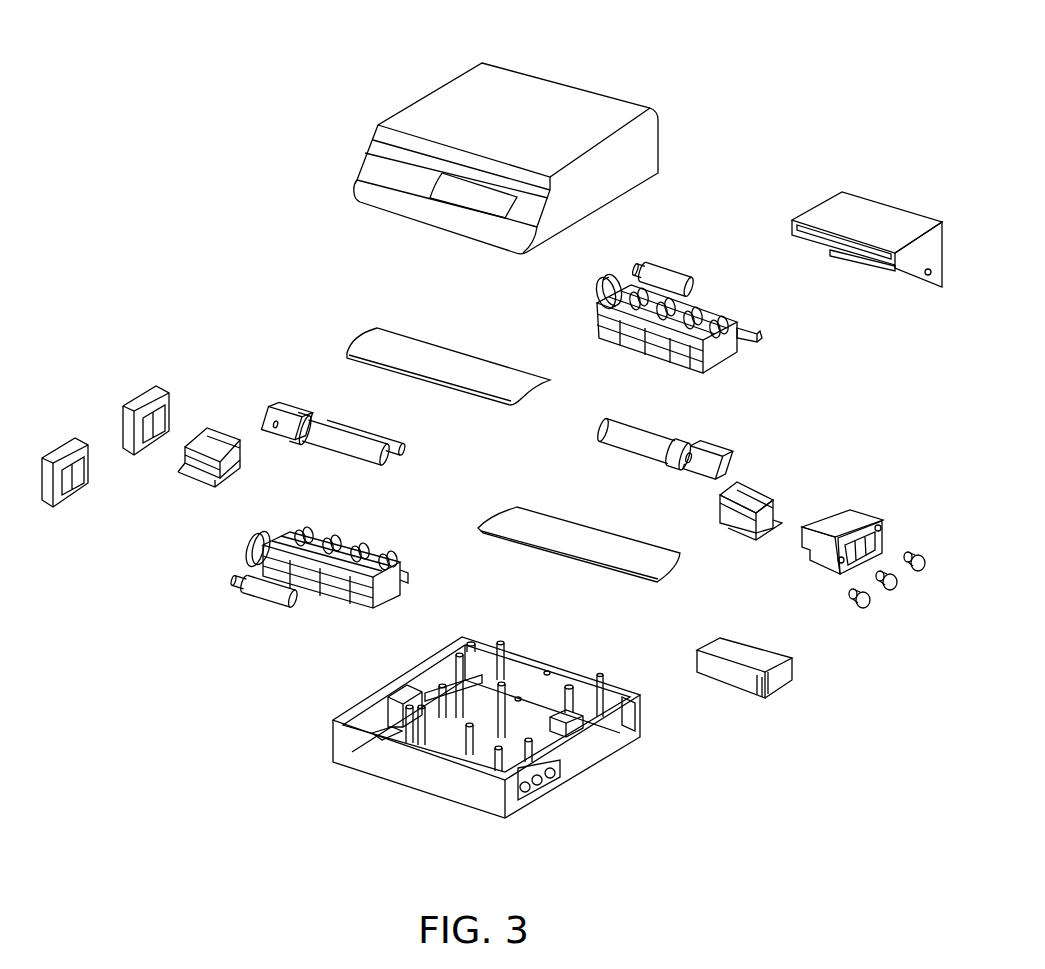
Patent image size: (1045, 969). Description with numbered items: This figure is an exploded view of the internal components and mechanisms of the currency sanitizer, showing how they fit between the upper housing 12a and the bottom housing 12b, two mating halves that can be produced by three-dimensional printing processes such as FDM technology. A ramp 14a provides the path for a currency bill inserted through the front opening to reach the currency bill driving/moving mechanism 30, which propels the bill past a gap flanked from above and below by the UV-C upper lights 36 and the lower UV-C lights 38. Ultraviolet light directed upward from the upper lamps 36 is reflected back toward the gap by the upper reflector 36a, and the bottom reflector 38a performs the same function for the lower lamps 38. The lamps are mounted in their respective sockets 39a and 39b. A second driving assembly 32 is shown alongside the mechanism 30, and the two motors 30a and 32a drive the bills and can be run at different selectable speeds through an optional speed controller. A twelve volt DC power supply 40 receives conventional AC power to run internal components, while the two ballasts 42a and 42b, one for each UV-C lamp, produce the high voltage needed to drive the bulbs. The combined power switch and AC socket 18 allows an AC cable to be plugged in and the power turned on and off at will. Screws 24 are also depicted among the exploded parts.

The upper housing 12a is at (570, 81).
The bottom housing 12b is at (580, 758).
The ramp 14a is at (890, 200).
The power switch and 110 AC socket 18 is at (855, 515).
The screws 24 is at (918, 558).
The currency bill driving/moving mechanism 30 is at (646, 266).
The motor 30a is at (690, 277).
The second roller unit 32 is at (350, 598).
The motor 32a is at (268, 598).
The UV-C upper lights 36 is at (705, 440).
The upper reflector 36a is at (447, 360).
The lower UV-C lights 38 is at (305, 405).
The bottom reflector 38a is at (563, 538).
The socket 39a is at (752, 487).
The socket 39b is at (215, 430).
The 12 volt DC power supply 40 is at (750, 650).
The ballast 42a is at (142, 400).
The ballast 42b is at (65, 445).